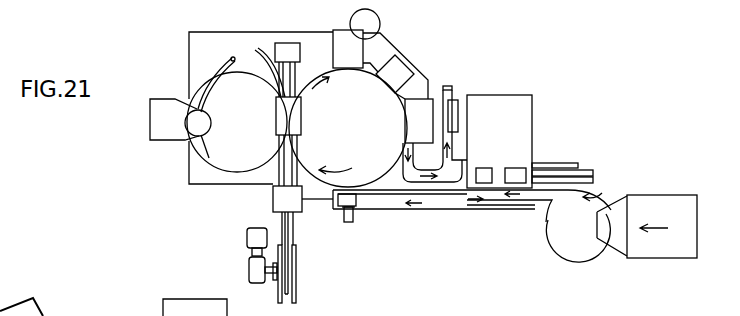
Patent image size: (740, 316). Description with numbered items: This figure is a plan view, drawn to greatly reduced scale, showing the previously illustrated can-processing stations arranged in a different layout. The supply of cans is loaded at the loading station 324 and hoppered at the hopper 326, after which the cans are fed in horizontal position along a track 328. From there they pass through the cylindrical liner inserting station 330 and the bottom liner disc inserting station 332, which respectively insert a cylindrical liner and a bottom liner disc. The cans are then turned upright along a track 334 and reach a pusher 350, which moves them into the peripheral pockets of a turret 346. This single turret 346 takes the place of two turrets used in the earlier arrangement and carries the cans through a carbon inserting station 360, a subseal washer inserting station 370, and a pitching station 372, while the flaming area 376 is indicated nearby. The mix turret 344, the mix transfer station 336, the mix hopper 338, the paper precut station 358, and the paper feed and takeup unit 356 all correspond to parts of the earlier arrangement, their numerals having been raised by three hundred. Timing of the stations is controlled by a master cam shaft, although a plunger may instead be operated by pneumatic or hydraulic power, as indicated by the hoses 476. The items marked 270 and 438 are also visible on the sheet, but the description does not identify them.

The housing 270 is at (452, 0).
The can loading station 324 is at (678, 215).
The hopper 326 is at (593, 248).
The track 328 is at (533, 209).
The cylindrical liner inserting station 330 is at (524, 161).
The bottom liner disc inserting station 332 is at (481, 167).
The track 334 is at (446, 192).
The mix transfer station 336 is at (304, 119).
The mix hopper 338 is at (166, 134).
The mix turret 344 is at (237, 164).
The turret 346 is at (372, 160).
The pusher 350 is at (353, 224).
The paper feed and takeup unit 356 is at (291, 42).
The paper precut station 358 is at (282, 200).
The carbon inserting station 360 is at (360, 60).
The subseal washer inserting station 370 is at (398, 62).
The pitching station 372 is at (430, 129).
The flaming area 376 is at (456, 98).
The bracket 438 is at (38, 298).
The hoses 476 is at (241, 74).